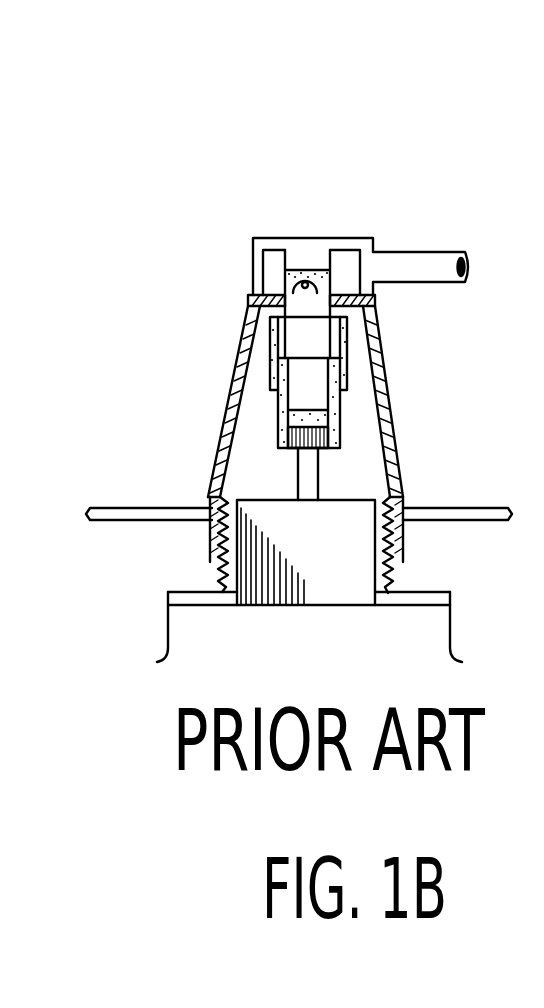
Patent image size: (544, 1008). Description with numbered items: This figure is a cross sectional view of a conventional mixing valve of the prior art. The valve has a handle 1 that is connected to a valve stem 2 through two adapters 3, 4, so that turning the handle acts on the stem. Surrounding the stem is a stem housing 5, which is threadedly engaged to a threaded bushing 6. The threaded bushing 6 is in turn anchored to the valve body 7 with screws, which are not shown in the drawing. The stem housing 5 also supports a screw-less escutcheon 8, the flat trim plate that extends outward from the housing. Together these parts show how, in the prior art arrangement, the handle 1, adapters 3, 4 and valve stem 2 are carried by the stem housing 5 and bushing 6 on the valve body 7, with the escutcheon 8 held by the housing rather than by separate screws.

The handle 1 is at (373, 240).
The valve stem 2 is at (313, 438).
The adapter 3 is at (300, 268).
The adapter 4 is at (312, 355).
The stem housing 5 is at (250, 306).
The threaded bushing 6 is at (224, 588).
The valve body 7 is at (203, 635).
The screw-less escutcheon 8 is at (137, 512).